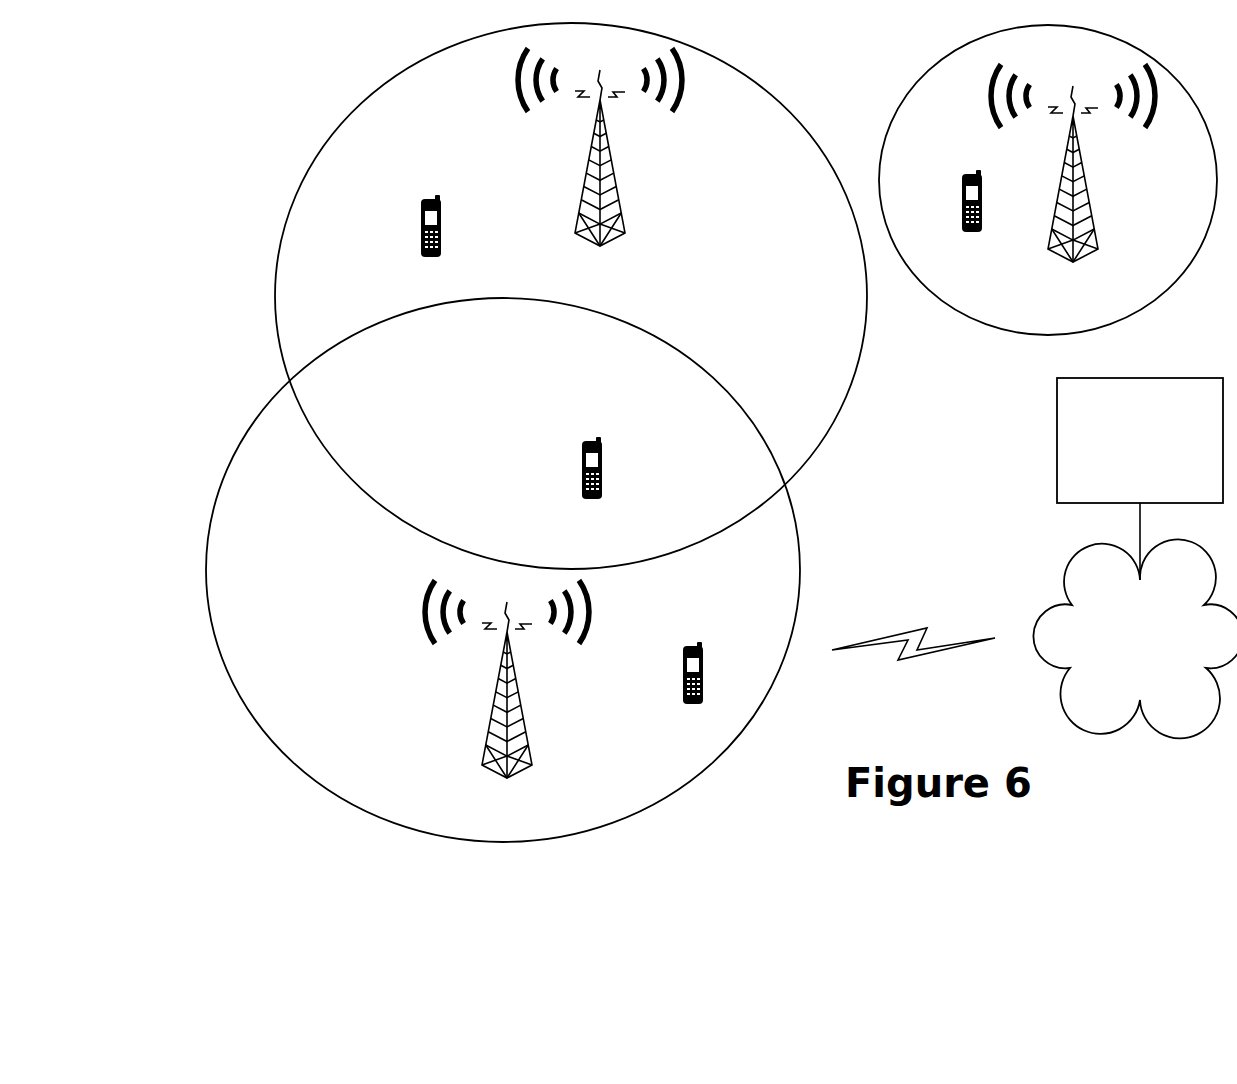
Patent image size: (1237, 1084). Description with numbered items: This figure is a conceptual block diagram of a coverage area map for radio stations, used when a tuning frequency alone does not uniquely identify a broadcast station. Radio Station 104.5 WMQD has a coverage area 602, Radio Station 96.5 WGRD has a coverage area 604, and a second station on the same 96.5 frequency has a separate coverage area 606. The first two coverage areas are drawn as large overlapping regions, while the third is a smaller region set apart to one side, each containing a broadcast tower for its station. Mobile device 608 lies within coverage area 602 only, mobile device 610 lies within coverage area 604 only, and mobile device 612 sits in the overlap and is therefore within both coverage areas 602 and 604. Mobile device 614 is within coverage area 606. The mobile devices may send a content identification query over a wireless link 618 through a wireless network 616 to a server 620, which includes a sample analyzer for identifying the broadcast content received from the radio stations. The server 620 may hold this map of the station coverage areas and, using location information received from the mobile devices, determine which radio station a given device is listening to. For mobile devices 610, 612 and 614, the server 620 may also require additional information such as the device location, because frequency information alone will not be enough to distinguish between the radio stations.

The coverage area 602 is at (320, 149).
The coverage area 604 is at (232, 456).
The coverage area 606 is at (922, 75).
The mobile device 608 is at (404, 233).
The mobile device 610 is at (668, 679).
The mobile device 612 is at (566, 474).
The mobile device 614 is at (946, 209).
The wireless network 616 is at (1135, 638).
The wireless link 618 is at (899, 614).
The server 620 is at (1140, 440).